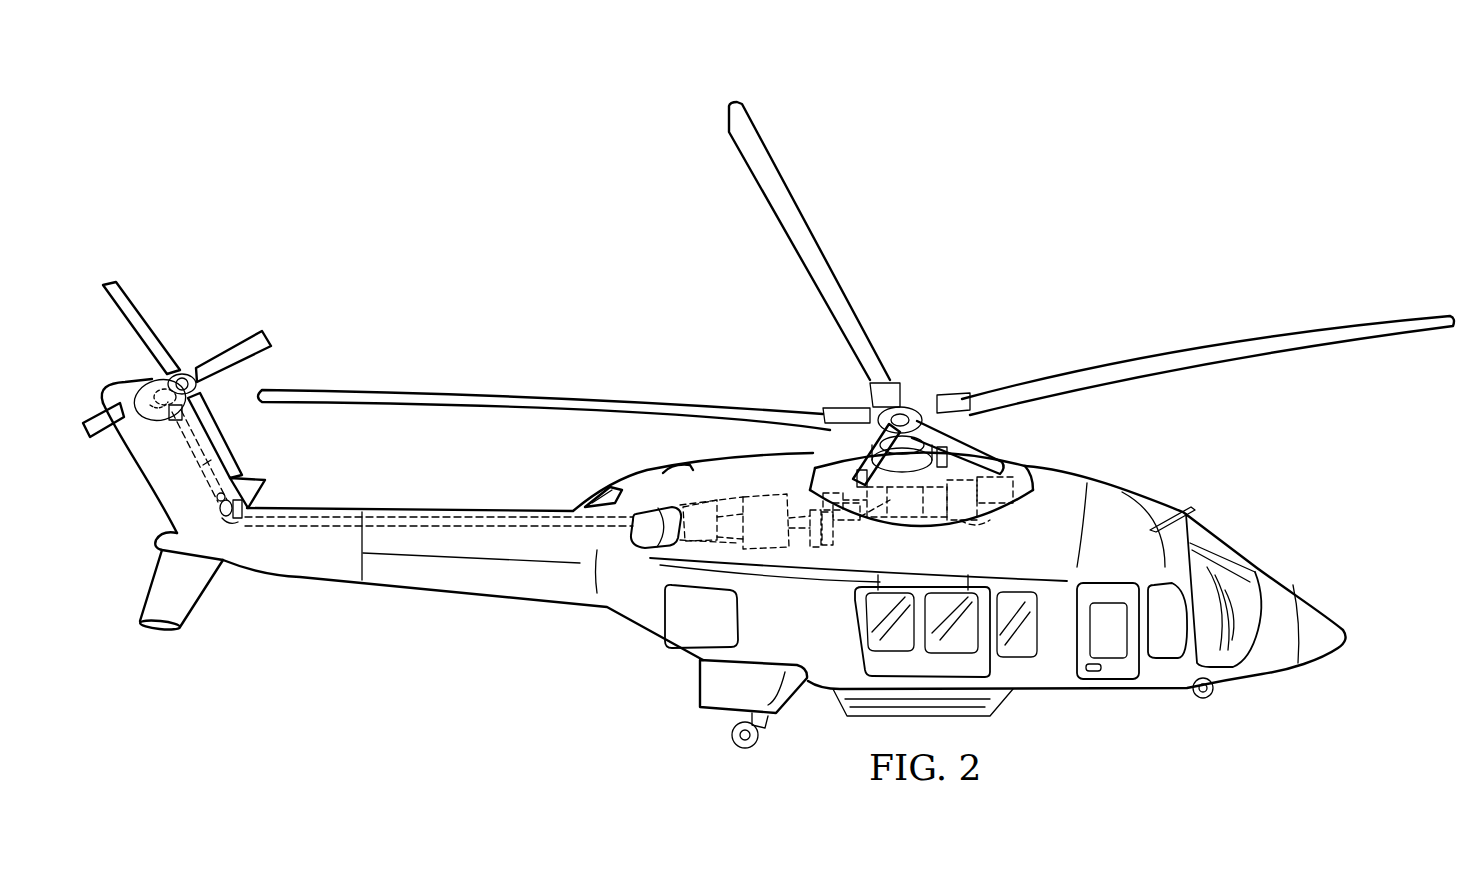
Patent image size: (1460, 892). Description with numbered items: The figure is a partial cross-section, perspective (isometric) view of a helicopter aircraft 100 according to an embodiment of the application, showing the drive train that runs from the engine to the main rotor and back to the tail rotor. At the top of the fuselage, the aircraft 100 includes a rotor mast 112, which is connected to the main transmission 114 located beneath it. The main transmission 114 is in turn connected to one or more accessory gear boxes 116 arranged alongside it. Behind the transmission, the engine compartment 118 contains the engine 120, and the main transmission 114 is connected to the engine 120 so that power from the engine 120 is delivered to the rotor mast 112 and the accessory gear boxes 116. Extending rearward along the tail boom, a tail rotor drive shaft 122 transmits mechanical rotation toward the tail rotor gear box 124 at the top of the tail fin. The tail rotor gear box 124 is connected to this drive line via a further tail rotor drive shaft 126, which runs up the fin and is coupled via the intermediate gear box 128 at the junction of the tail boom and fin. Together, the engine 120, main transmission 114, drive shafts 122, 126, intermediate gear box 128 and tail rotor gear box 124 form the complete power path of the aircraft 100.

The aircraft 100 is at (768, 420).
The rotor mast 112 is at (918, 407).
The main transmission 114 is at (923, 510).
The accessory gear box 116 is at (993, 513).
The engine compartment 118 is at (767, 485).
The engine 120 is at (753, 533).
The tail rotor drive shaft 122 is at (450, 517).
The tail rotor gear box 124 is at (140, 378).
The tail rotor drive shaft 126 is at (217, 458).
The intermediate gear box 128 is at (230, 530).